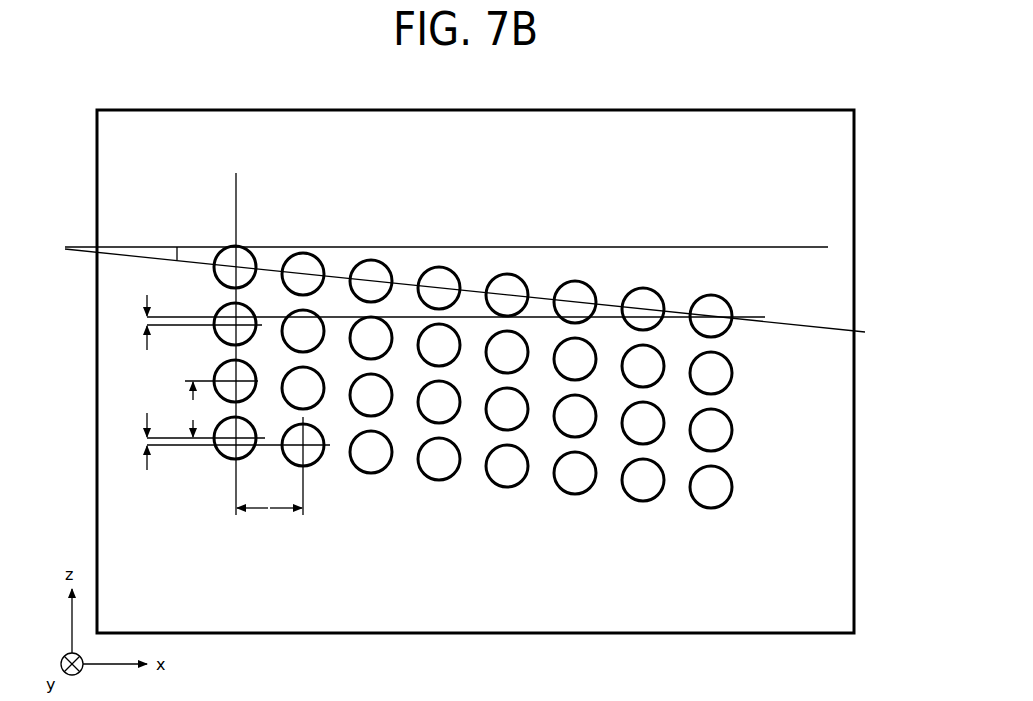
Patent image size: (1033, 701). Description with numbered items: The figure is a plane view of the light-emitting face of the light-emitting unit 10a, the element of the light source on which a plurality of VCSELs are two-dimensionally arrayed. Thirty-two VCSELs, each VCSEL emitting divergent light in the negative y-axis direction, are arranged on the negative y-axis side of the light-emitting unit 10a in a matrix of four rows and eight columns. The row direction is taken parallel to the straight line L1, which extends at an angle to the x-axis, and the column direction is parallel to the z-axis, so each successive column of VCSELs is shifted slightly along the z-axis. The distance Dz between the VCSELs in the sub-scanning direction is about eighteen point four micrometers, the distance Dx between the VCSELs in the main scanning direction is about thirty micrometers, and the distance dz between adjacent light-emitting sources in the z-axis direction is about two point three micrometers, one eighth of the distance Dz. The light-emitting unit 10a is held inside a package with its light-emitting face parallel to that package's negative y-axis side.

The light-emitting unit 10a is at (748, 92).
The element VCSEL is at (314, 242).
The straight line L1 is at (478, 296).
The distance between adjacent light-emitting sources in z-axis direction dz is at (146, 325).
The distance between VCSELs in sub-scanning direction Dz is at (219, 409).
The distance between VCSELs in main scanning direction Dx is at (269, 497).